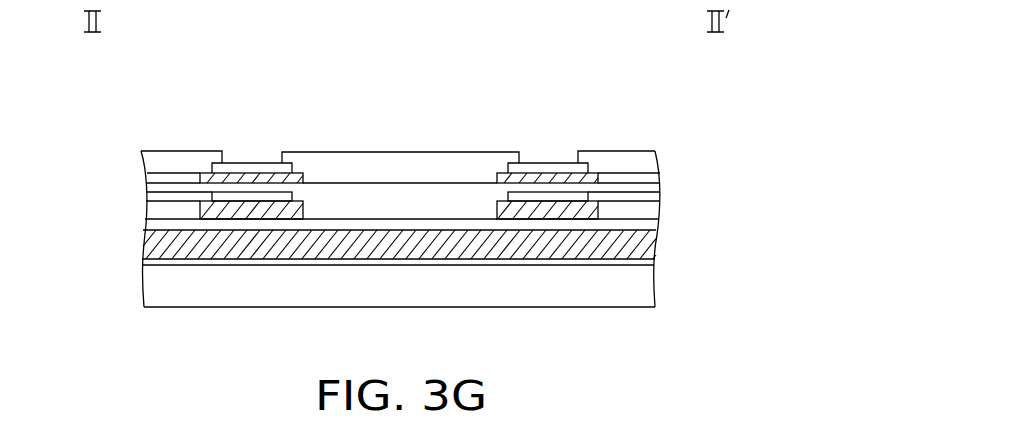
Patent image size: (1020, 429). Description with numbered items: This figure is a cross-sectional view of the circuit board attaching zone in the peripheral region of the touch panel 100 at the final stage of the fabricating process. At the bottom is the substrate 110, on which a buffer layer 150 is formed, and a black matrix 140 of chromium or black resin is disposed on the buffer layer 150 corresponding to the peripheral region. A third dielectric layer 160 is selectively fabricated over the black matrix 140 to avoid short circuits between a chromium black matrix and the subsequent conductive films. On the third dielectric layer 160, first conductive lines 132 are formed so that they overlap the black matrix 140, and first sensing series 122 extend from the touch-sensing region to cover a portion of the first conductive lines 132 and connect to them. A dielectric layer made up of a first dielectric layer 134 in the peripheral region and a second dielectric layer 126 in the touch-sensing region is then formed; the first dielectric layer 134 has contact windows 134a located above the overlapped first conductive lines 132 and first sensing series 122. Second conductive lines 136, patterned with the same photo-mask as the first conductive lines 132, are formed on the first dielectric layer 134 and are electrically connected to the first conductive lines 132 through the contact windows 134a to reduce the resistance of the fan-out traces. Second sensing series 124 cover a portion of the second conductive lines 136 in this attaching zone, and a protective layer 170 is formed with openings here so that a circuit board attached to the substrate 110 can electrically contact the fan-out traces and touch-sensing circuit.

The touch panel 100 is at (683, 365).
The substrate 110 is at (163, 288).
The first sensing series 122 is at (200, 180).
The second sensing series 124 is at (212, 166).
The second dielectric layer 126 is at (400, 196).
The first conductive lines 132 is at (198, 209).
The first dielectric layer 134 is at (643, 192).
The contact window 134a is at (228, 186).
The second conductive lines 136 is at (200, 172).
The black matrix 140 is at (148, 245).
The buffer layer 150 is at (153, 265).
The third dielectric layer 160 is at (157, 225).
The protective layer 170 is at (440, 158).